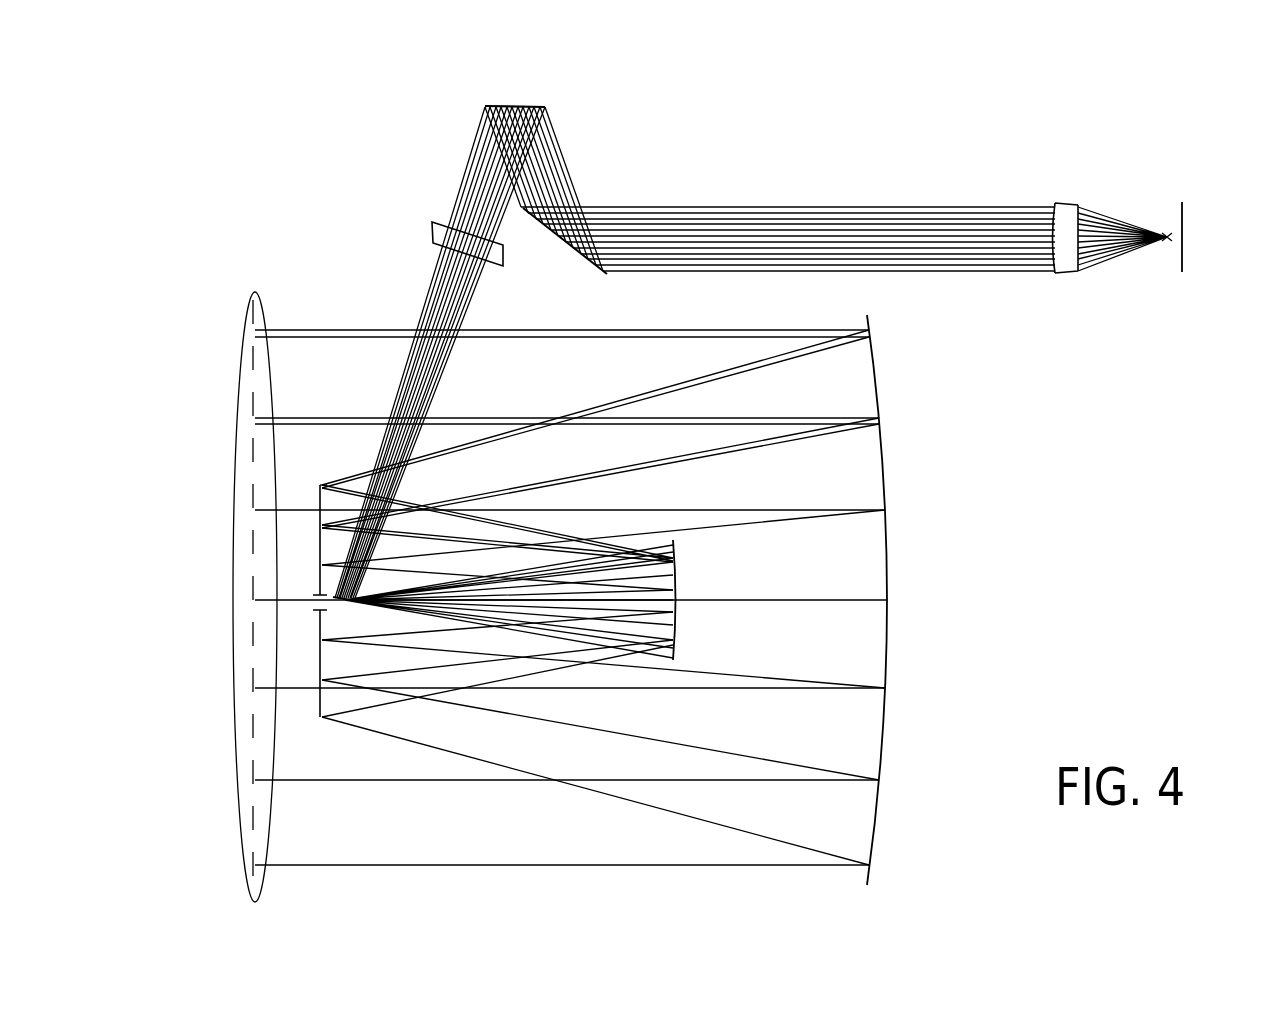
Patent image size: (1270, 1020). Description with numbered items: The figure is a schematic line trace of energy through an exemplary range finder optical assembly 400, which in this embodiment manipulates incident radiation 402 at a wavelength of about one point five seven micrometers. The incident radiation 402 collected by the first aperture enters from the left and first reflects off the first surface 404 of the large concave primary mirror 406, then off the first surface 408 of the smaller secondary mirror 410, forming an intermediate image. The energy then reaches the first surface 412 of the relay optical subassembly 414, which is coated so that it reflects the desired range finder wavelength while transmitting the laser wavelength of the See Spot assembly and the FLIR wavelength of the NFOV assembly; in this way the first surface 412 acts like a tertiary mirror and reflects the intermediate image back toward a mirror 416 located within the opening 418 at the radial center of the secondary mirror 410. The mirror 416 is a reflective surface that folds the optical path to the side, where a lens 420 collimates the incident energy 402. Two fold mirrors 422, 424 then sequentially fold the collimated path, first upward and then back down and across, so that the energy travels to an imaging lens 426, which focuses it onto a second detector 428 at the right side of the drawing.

The range finder optical assembly 400 is at (985, 145).
The incident radiation 402 is at (232, 358).
The first surface of the primary mirror 404 is at (877, 387).
The primary mirror 406 is at (872, 346).
The first surface of the secondary mirror 408 is at (322, 498).
The secondary mirror 410 is at (320, 548).
The first surface of the relay optical subassembly 412 is at (672, 548).
The relay optical subassembly 414 is at (678, 562).
The mirror 416 is at (345, 612).
The opening 418 is at (328, 608).
The lens 420 is at (435, 232).
The fold mirror 422 is at (515, 105).
The fold mirror 424 is at (572, 250).
The imaging lens 426 is at (1068, 203).
The second detector 428 is at (1185, 217).